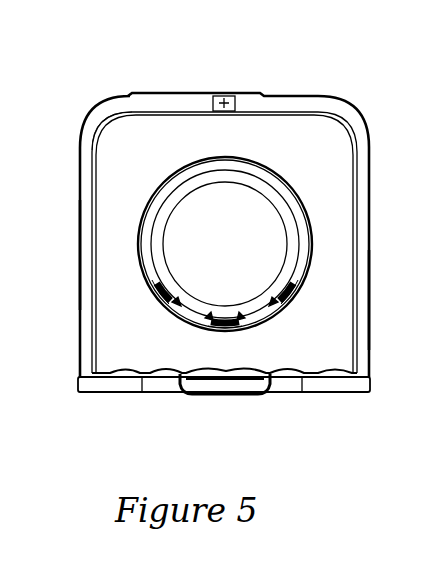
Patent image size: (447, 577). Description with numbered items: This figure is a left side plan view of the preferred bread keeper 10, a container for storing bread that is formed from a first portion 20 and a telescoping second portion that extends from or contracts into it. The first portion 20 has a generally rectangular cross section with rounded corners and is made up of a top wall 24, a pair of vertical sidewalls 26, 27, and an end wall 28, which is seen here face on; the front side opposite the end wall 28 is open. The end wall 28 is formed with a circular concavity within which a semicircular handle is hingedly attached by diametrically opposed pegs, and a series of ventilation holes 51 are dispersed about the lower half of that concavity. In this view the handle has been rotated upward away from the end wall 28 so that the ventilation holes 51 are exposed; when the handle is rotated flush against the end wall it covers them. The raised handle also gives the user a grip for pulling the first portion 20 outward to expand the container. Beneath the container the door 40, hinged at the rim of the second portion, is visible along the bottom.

The bread keeper 10 is at (297, 75).
The first portion 20 is at (362, 190).
The top wall 24 is at (155, 94).
The sidewall 26 is at (371, 305).
The sidewall 27 is at (79, 255).
The end wall 28 is at (325, 145).
The door 40 is at (355, 383).
The ventilation holes 51 is at (227, 340).